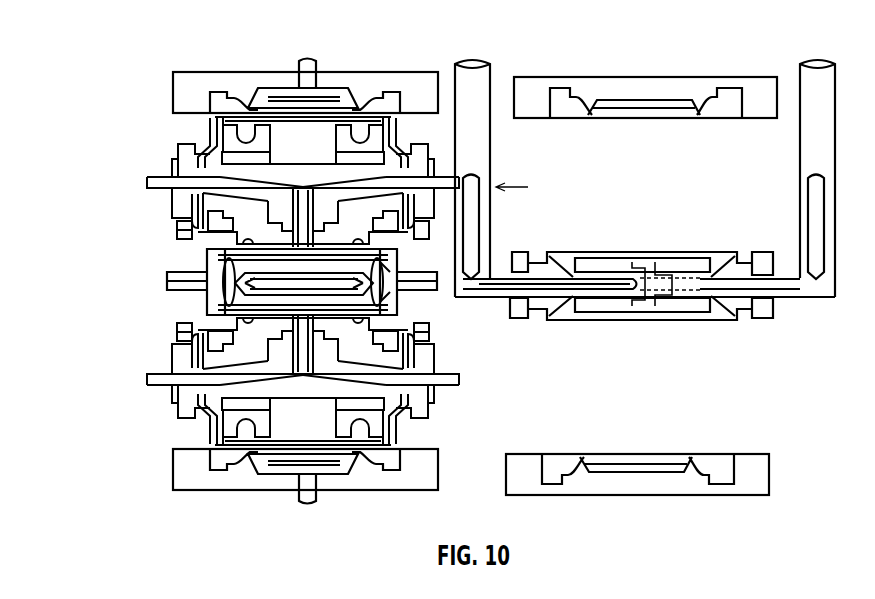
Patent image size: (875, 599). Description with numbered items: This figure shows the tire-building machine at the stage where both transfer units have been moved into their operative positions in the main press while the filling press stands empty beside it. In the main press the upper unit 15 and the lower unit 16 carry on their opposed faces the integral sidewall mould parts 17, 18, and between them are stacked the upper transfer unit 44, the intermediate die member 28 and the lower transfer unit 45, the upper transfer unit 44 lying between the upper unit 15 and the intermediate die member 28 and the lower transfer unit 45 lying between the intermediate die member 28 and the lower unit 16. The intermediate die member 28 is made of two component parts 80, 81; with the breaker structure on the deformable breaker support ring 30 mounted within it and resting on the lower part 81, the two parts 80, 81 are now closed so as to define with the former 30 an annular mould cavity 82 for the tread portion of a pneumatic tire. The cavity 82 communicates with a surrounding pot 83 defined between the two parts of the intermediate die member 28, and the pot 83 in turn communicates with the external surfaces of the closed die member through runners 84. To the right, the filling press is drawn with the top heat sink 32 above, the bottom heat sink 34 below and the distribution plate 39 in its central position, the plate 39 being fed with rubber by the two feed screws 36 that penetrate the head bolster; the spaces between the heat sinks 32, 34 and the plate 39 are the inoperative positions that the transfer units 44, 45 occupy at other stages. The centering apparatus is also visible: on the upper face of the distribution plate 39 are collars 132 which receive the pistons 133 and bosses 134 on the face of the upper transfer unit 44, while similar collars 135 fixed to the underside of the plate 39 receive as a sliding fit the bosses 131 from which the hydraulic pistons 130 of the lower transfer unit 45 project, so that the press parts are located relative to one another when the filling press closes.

The upper unit 15 is at (178, 93).
The lower unit 16 is at (247, 489).
The sidewall mould part 17 is at (233, 93).
The sidewall mould part 18 is at (188, 489).
The intermediate die member 28 is at (150, 285).
The breaker support ring 30 is at (206, 301).
The top heat sink 32 is at (759, 83).
The bottom heat sink 34 is at (747, 489).
The rubber feed screws 36 is at (480, 83).
The distribution plate 39 is at (743, 309).
The upper transfer unit 44 is at (186, 146).
The lower transfer unit 45 is at (184, 419).
The component part of the intermediate die member 80 is at (207, 258).
The component part of the intermediate die member 81 is at (212, 306).
The annular mould cavity 82 is at (395, 271).
The pot 83 is at (394, 289).
The runners 84 is at (395, 298).
The hydraulic pistons 130 is at (182, 324).
The bosses 131 is at (190, 331).
The collars 132 is at (522, 258).
The pistons 133 is at (180, 242).
The bosses 134 is at (180, 228).
The collars 135 is at (520, 313).